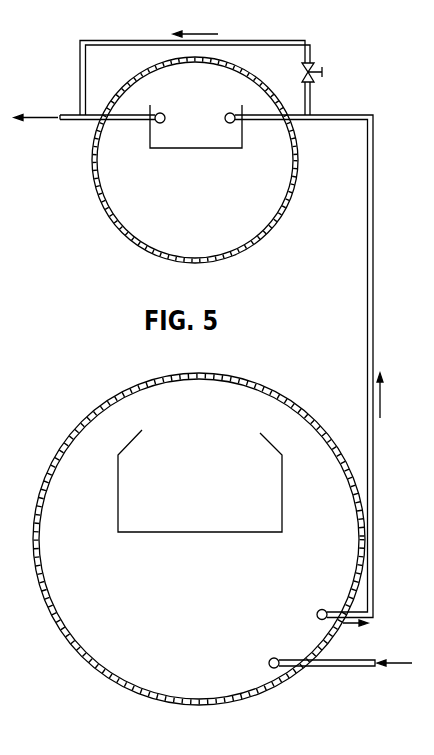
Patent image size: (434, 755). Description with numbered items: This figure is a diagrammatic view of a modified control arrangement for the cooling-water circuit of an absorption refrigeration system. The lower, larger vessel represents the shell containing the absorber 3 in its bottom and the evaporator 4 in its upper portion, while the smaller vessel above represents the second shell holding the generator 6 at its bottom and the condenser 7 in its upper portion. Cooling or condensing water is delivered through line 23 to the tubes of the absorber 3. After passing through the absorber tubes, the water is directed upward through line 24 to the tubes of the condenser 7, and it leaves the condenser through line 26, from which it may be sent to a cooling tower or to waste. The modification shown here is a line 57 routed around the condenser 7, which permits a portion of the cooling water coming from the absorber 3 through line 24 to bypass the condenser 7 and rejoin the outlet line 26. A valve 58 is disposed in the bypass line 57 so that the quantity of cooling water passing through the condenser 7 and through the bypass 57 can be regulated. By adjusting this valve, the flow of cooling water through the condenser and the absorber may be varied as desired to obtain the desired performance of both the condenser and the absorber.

The absorber 3 is at (199, 539).
The evaporator 4 is at (125, 493).
The generator 6 is at (101, 198).
The condenser 7 is at (196, 125).
The line 23 is at (322, 668).
The line 24 is at (374, 214).
The line 26 is at (65, 122).
The bypass line 57 is at (241, 42).
The valve 58 is at (323, 70).